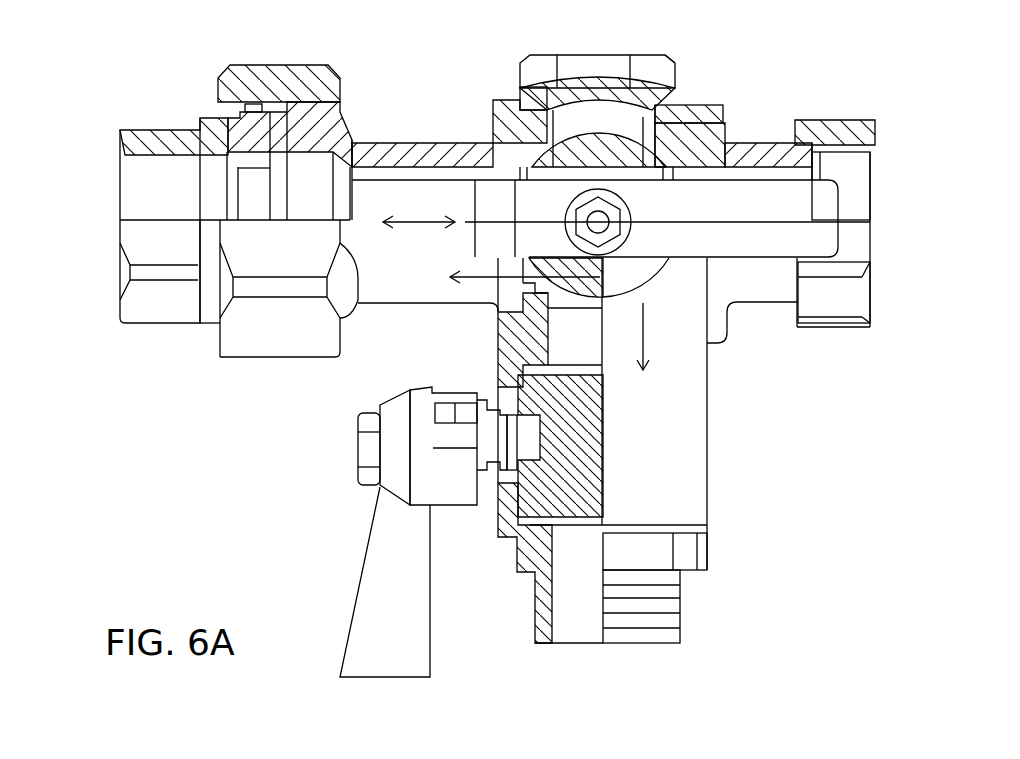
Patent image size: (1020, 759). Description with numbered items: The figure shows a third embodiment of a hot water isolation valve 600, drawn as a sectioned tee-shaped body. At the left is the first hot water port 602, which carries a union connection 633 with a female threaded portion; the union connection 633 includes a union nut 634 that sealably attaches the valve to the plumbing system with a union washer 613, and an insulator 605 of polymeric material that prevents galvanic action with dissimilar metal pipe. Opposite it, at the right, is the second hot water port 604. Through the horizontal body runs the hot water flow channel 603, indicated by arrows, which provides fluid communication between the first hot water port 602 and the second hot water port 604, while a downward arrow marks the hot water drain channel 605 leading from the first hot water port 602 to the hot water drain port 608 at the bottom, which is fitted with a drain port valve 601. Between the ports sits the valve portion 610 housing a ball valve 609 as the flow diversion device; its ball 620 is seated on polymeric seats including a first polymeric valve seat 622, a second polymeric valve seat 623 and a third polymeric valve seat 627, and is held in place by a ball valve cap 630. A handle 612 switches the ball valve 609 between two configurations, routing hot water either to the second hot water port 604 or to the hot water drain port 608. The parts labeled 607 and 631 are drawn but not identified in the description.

The hot water isolation valve 600 is at (876, 366).
The drain port valve 601 is at (598, 432).
The first hot water port 602 is at (120, 219).
The hot water flow channel 603 is at (403, 226).
The second hot water port 604 is at (873, 220).
The hot water drain channel 605 is at (243, 108).
The handle lever 607 is at (378, 567).
The hot water drain port 608 is at (632, 645).
The ball valve 609 is at (520, 92).
The valve portion 610 is at (723, 110).
The handle 612 is at (838, 180).
The union washer 613 is at (333, 102).
The ball 620 is at (593, 55).
The first polymeric valve seat 622 is at (496, 128).
The second polymeric valve seat 623 is at (673, 157).
The third polymeric valve seat 627 is at (667, 107).
The ball valve cap 630 is at (667, 53).
The ball valve member 631 is at (624, 224).
The union connection 633 is at (157, 325).
The union nut 634 is at (260, 360).